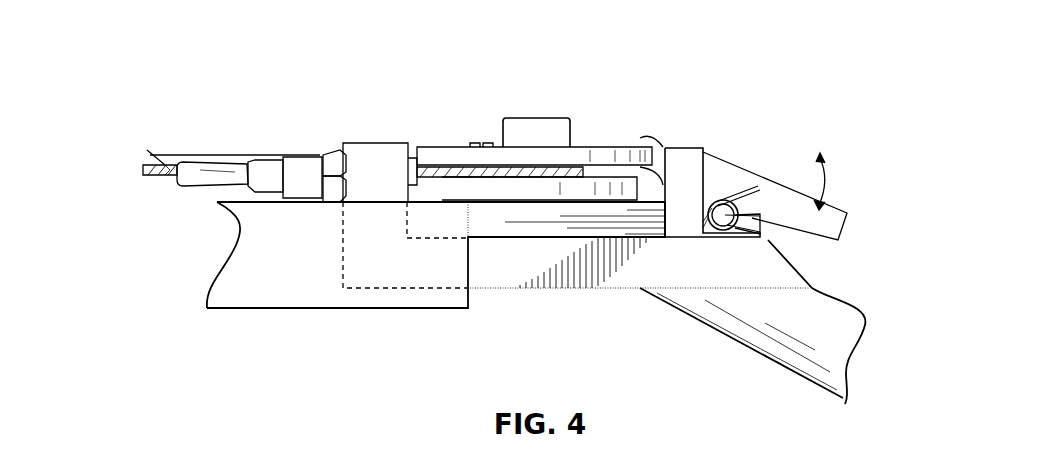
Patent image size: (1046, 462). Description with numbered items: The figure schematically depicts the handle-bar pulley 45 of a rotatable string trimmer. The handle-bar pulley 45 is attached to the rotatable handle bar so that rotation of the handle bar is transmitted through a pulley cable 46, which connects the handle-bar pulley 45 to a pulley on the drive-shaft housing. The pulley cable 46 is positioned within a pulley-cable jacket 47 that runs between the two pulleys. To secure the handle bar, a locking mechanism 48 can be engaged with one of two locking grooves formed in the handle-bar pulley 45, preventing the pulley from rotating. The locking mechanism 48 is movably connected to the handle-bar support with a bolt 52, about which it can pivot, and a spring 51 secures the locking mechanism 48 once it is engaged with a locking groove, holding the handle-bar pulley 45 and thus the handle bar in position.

The handle-bar pulley 45 is at (605, 150).
The pulley cable 46 is at (455, 168).
The pulley-cable jacket 47 is at (203, 175).
The locking mechanism 48 is at (837, 213).
The spring 51 is at (740, 188).
The bolt 52 is at (752, 220).